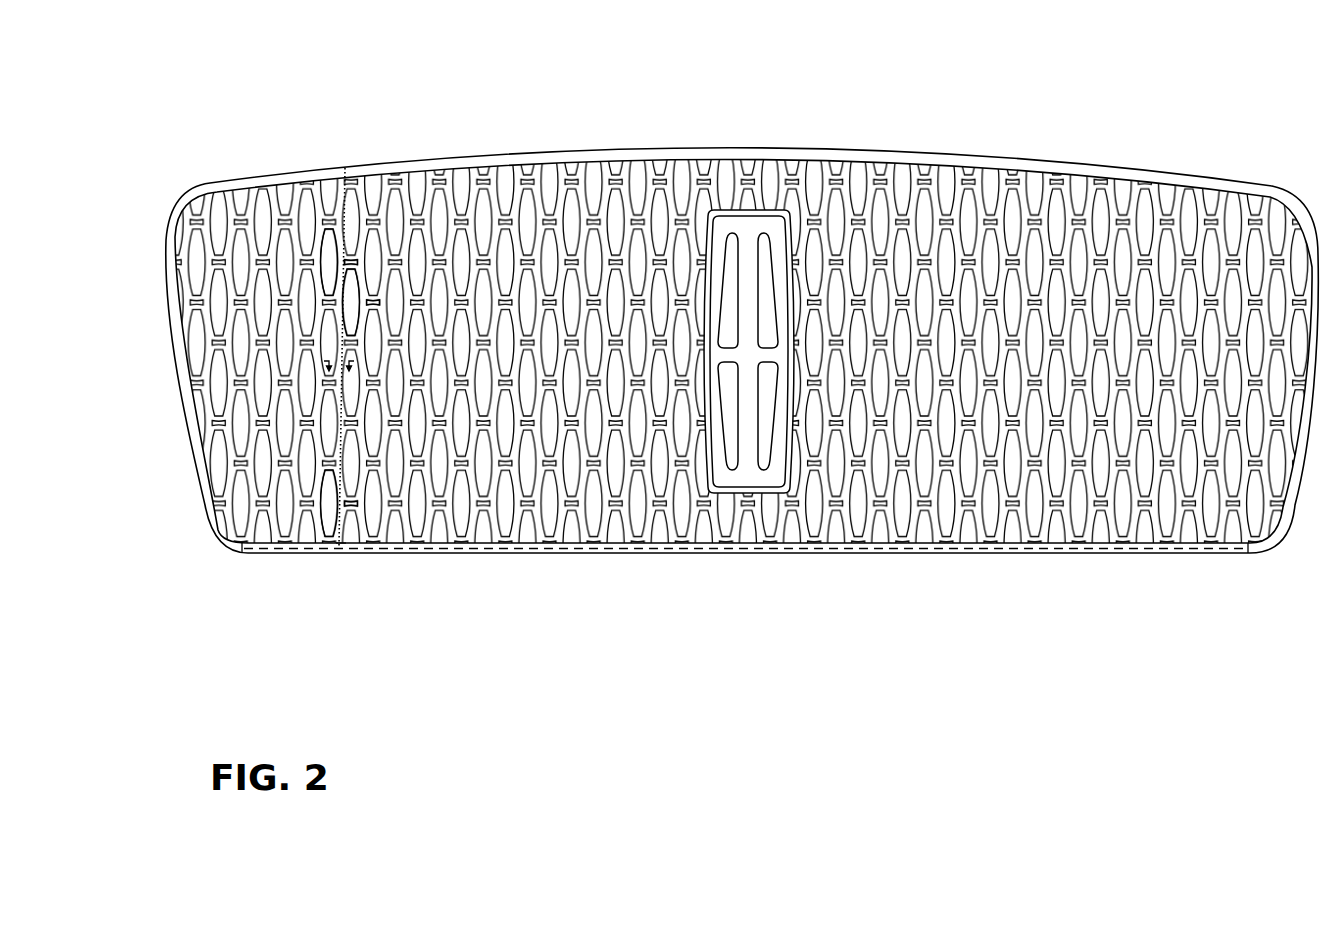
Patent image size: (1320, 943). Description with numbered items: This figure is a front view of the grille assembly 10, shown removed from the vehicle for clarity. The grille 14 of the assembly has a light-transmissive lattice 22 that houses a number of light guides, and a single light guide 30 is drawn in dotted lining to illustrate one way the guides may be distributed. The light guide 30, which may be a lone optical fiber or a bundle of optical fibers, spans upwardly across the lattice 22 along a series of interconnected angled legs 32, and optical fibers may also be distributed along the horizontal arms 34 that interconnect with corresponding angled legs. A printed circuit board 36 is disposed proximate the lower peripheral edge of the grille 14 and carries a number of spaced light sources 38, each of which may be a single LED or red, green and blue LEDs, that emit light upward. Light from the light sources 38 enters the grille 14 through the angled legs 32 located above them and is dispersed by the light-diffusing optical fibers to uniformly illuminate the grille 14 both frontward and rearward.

The grille assembly 10 is at (743, 290).
The grille 14 is at (1174, 198).
The lattice 22 is at (1032, 187).
The light guide 30 is at (344, 168).
The angled legs 32 is at (340, 320).
The horizontal arms 34 is at (376, 300).
The printed circuit board 36 is at (472, 557).
The light sources 38 is at (367, 525).